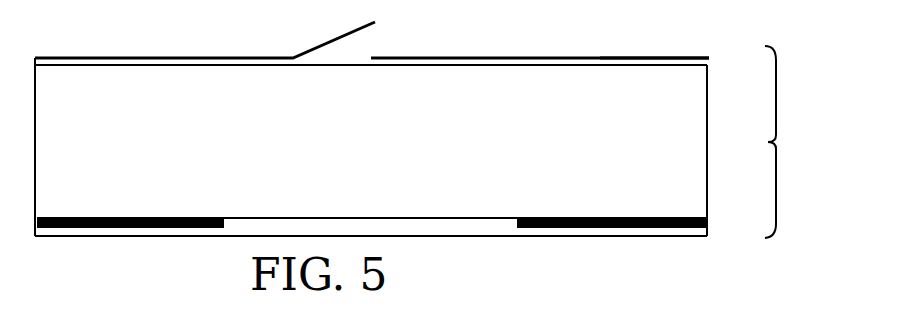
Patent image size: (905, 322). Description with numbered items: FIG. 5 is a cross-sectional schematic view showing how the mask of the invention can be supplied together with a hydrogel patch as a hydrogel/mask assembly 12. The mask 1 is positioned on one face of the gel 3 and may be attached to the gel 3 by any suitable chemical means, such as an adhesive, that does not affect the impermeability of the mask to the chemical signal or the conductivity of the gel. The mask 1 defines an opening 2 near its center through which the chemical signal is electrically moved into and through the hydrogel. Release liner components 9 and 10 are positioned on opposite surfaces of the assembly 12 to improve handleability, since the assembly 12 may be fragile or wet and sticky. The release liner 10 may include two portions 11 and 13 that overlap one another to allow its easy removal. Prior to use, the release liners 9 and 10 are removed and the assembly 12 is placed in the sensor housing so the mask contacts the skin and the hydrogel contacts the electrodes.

The mask 1 is at (690, 228).
The opening 2 is at (465, 222).
The gel 3 is at (692, 177).
The release liner component 9 is at (80, 238).
The release liner 10 is at (664, 56).
The portion of release liner 11 is at (336, 37).
The hydrogel/mask assembly 12 is at (793, 142).
The portion of release liner 13 is at (390, 55).